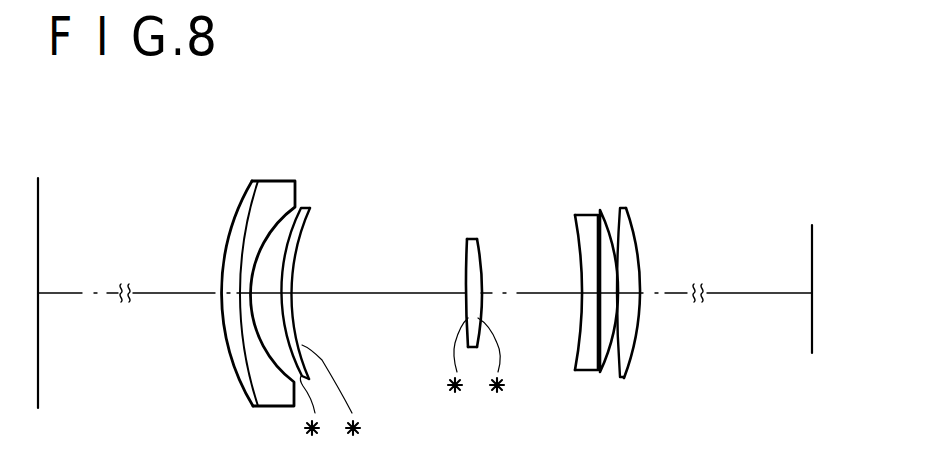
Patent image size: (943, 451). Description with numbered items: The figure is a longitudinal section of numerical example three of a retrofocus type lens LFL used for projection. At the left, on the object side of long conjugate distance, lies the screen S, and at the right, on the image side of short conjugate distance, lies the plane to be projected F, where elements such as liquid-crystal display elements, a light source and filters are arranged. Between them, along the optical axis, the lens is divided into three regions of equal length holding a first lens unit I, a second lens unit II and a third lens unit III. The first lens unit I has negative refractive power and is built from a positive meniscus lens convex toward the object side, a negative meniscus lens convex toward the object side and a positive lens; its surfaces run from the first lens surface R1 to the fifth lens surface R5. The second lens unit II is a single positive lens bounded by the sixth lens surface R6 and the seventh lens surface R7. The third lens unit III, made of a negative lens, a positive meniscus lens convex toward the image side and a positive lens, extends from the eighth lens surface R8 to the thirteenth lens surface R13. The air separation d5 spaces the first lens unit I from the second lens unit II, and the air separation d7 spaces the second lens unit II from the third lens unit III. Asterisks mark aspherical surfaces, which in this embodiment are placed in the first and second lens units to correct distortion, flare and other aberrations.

The screen S is at (39, 208).
The plane to be projected F is at (812, 240).
The retrofocus type lens LFL is at (650, 98).
The first lens unit I is at (334, 141).
The second lens unit II is at (519, 141).
The third lens unit III is at (660, 141).
The first lens surface R1 is at (235, 217).
The fifth lens surface R5 is at (306, 224).
The sixth lens surface R6 is at (465, 253).
The seventh lens surface R7 is at (478, 252).
The eighth lens surface R8 is at (577, 245).
The thirteenth lens surface R13 is at (634, 245).
The fifth air separation d5 is at (465, 295).
The seventh air separation d7 is at (580, 294).